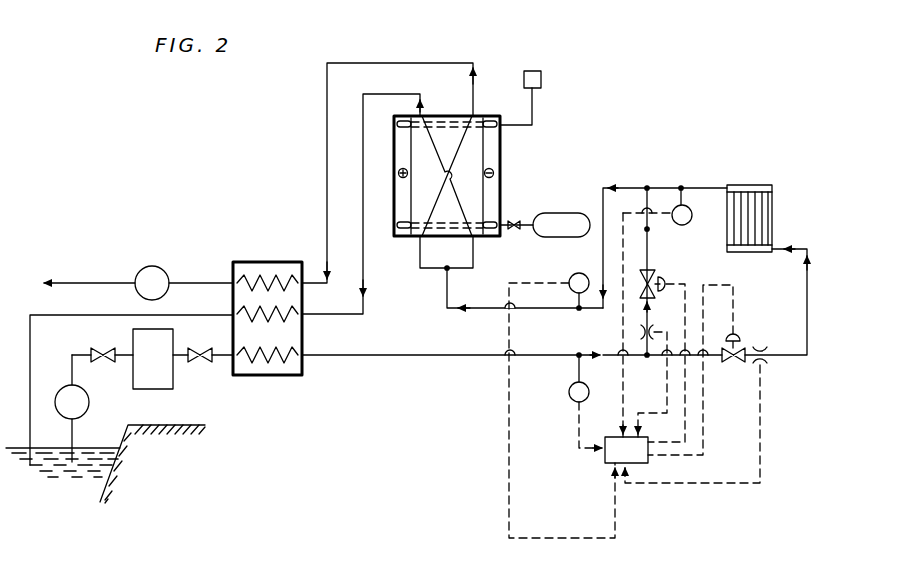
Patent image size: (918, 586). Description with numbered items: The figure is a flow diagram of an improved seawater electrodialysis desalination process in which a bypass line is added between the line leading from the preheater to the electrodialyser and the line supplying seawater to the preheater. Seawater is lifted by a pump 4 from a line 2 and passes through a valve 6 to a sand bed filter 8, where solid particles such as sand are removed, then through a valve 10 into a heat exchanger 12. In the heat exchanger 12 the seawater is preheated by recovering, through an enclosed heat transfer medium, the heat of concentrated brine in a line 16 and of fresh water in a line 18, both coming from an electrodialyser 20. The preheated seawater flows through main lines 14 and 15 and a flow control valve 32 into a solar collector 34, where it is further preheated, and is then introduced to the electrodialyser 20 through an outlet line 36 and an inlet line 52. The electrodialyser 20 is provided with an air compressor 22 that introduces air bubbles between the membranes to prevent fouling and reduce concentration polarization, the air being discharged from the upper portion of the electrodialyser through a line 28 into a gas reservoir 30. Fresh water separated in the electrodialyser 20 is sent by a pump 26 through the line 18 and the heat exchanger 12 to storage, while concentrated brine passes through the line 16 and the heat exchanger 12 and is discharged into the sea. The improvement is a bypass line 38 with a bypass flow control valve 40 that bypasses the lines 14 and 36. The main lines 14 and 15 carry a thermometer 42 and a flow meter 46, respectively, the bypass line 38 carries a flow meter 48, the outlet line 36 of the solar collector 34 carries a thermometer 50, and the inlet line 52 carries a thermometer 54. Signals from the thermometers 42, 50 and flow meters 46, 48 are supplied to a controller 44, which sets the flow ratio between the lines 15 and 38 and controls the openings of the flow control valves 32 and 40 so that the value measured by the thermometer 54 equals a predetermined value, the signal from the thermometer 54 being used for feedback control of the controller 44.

The line 2 is at (75, 427).
The pump 4 is at (84, 385).
The valve 6 is at (111, 343).
The sand bed filter 8 is at (173, 382).
The valve 10 is at (205, 343).
The heat exchanger 12 is at (259, 383).
The main line 14 is at (381, 362).
The main line 15 is at (767, 361).
The line 16 is at (387, 94).
The line 18 is at (387, 61).
The electrodialyser 20 is at (490, 117).
The air compressor 22 is at (571, 212).
The pump 26 is at (158, 267).
The line 28 is at (532, 112).
The gas reservoir 30 is at (541, 79).
The flow control valve 32 is at (740, 339).
The solar collector 34 is at (772, 185).
The outlet line 36 is at (693, 188).
The bypass line 38 is at (650, 247).
The bypass flow control valve 40 is at (672, 268).
The thermometer 42 is at (568, 399).
The controller 44 is at (608, 463).
The flow meter 46 is at (751, 372).
The flow meter 48 is at (632, 332).
The thermometer 50 is at (690, 214).
The inlet line 52 is at (543, 312).
The thermometer 54 is at (586, 271).